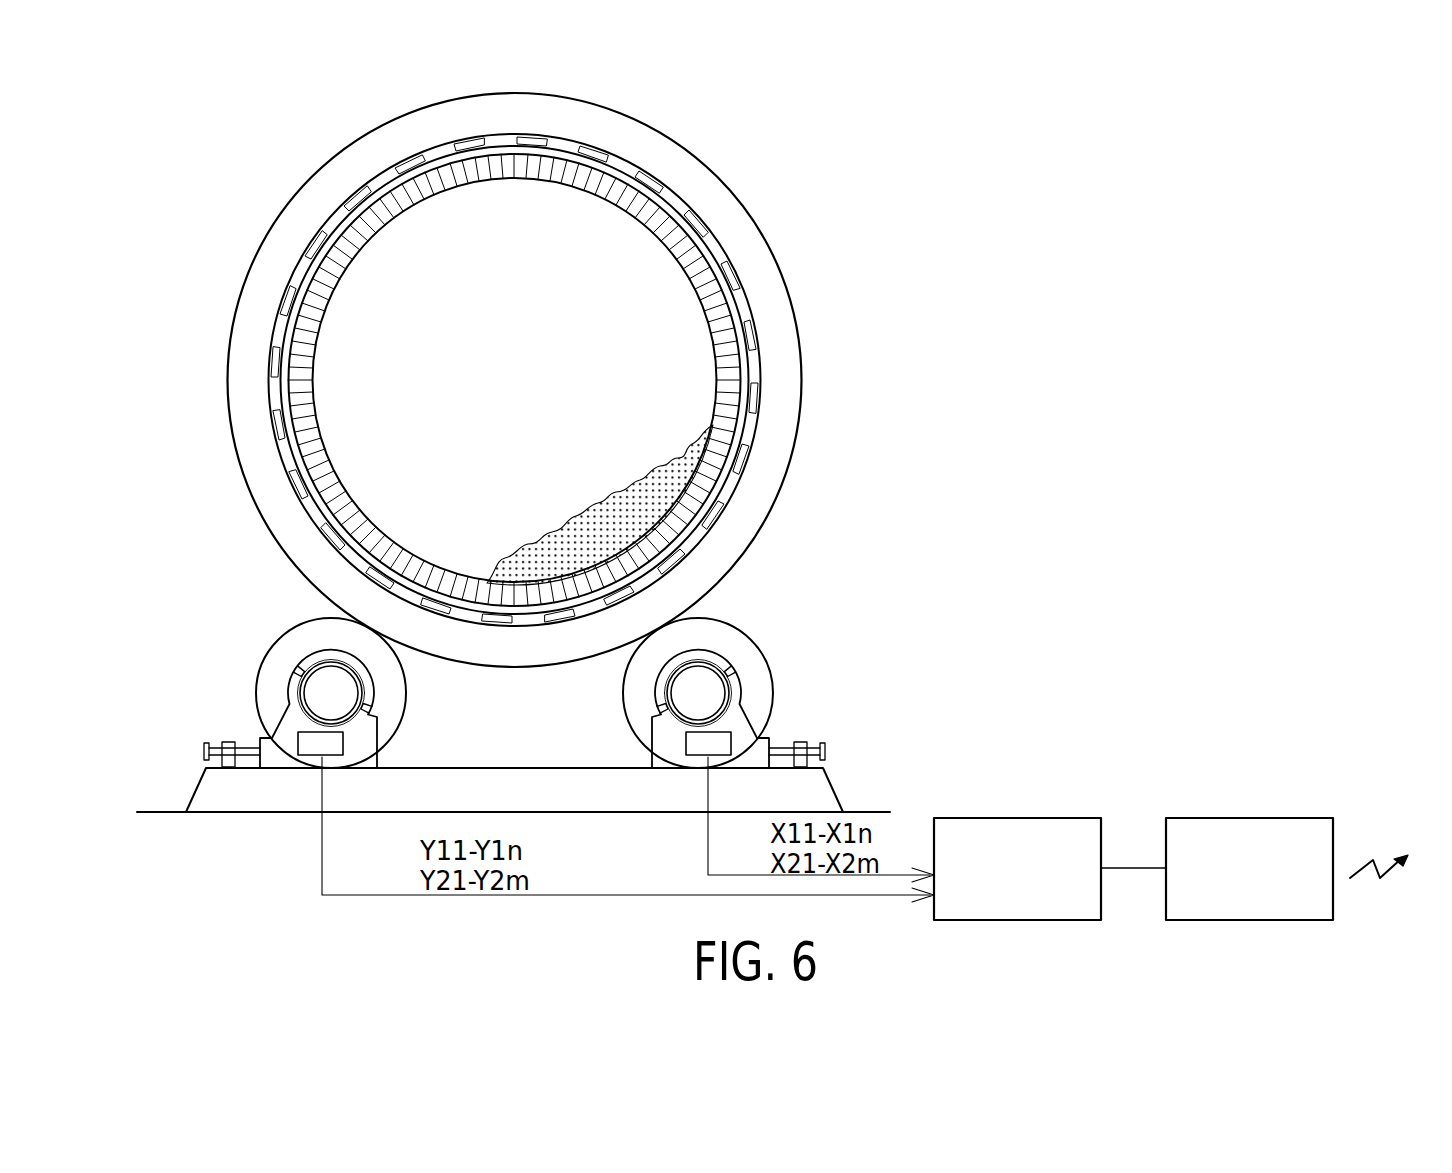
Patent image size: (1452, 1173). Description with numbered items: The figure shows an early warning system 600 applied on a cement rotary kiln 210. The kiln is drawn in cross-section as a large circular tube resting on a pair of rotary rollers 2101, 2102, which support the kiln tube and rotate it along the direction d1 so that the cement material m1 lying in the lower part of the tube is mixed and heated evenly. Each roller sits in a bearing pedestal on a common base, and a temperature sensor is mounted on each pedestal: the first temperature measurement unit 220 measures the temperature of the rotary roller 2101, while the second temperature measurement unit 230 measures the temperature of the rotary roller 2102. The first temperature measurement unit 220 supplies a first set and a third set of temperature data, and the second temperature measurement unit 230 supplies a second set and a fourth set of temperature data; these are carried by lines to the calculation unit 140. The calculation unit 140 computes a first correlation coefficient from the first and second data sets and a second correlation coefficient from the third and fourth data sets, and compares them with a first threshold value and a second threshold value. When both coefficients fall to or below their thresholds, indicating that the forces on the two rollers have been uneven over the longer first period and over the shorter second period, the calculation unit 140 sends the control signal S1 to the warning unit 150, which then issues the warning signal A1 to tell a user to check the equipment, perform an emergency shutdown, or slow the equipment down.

The early warning system 600 is at (815, 127).
The cement rotary kiln 210 is at (773, 465).
The rotary roller 2101 is at (753, 655).
The rotary roller 2102 is at (277, 657).
The first temperature measurement unit 220 is at (698, 745).
The second temperature measurement unit 230 is at (330, 745).
The calculation unit 140 is at (1057, 818).
The warning unit 150 is at (1287, 818).
The cement material m1 is at (613, 517).
The direction d1 is at (733, 167).
The control signal S1 is at (1133, 850).
The warning signal A1 is at (1393, 851).